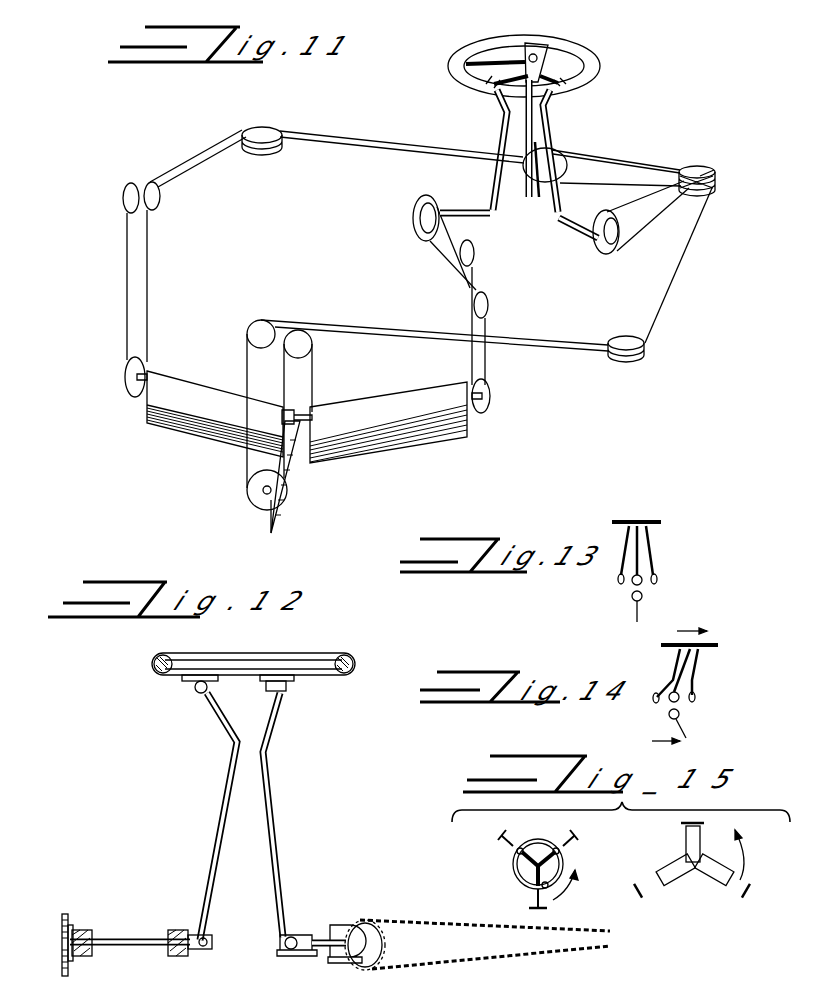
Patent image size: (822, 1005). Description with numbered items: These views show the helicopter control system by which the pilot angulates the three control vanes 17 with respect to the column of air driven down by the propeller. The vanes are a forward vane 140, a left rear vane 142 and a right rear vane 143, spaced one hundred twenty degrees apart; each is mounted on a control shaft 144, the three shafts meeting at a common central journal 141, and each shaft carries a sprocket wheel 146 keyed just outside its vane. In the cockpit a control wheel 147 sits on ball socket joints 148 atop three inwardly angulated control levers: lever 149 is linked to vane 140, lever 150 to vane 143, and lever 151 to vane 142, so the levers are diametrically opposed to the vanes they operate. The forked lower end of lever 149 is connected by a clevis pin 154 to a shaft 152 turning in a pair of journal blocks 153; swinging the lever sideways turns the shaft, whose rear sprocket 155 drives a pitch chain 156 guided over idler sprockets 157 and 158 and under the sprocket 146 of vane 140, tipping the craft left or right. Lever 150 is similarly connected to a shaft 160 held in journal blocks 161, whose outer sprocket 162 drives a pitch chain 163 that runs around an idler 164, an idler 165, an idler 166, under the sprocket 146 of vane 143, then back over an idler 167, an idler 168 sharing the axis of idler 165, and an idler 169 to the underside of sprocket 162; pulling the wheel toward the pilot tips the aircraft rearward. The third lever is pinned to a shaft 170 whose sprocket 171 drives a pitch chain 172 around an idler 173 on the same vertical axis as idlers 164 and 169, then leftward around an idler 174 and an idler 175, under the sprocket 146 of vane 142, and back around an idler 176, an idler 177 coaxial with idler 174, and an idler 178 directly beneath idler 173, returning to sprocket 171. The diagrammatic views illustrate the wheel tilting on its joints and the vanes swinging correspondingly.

In FIG. 11, the control vanes 17 is at (205, 433).
In FIG. 15, the control vanes 17 is at (707, 886).
In FIG. 11, the control vane 140 is at (388, 402).
In FIG. 11, the central journal 141 is at (297, 410).
In FIG. 11, the left control vane 142 is at (201, 392).
In FIG. 11, the right control vane 143 is at (296, 488).
In FIG. 11, the control shaft 144 is at (145, 371).
In FIG. 11, the sprocket wheel 146 is at (132, 396).
In FIG. 11, the control wheel 147 is at (602, 58).
In FIG. 12, the control wheel 147 is at (176, 654).
In FIG. 13, the control wheel 147 is at (663, 520).
In FIG. 14, the control wheel 147 is at (718, 644).
In FIG. 15, the control wheel 147 is at (537, 841).
In FIG. 11, the ball socket joints 148 is at (563, 85).
In FIG. 12, the ball socket joints 148 is at (199, 692).
In FIG. 11, the control lever 149 is at (504, 129).
In FIG. 12, the control lever 149 is at (224, 802).
In FIG. 11, the control lever 150 is at (540, 124).
In FIG. 12, the control lever 150 is at (272, 779).
In FIG. 11, the control lever 151 is at (546, 139).
In FIG. 11, the shaft 152 is at (460, 211).
In FIG. 12, the shaft 152 is at (126, 940).
In FIG. 12, the journal blocks 153 is at (90, 960).
In FIG. 12, the clevis pin 154 is at (212, 944).
In FIG. 11, the sprocket 155 is at (418, 210).
In FIG. 12, the sprocket 155 is at (62, 962).
In FIG. 11, the pitch chain 156 is at (487, 326).
In FIG. 11, the idler sprocket 157 is at (475, 250).
In FIG. 11, the idler sprocket 158 is at (489, 298).
In FIG. 11, the shaft 160 is at (538, 192).
In FIG. 12, the shaft 160 is at (322, 958).
In FIG. 12, the journal blocks 161 is at (290, 958).
In FIG. 11, the sprocket 162 is at (562, 166).
In FIG. 12, the sprocket 162 is at (386, 937).
In FIG. 11, the pitch chain 163 is at (352, 324).
In FIG. 12, the pitch chain 163 is at (506, 927).
In FIG. 11, the idler 164 is at (716, 184).
In FIG. 11, the idler 165 is at (626, 338).
In FIG. 11, the idler 166 is at (257, 322).
In FIG. 11, the idler 167 is at (307, 342).
In FIG. 11, the idler 168 is at (628, 358).
In FIG. 11, the idler 169 is at (708, 196).
In FIG. 11, the shaft 170 is at (575, 234).
In FIG. 11, the sprocket 171 is at (606, 248).
In FIG. 11, the pitch chain 172 is at (659, 167).
In FIG. 11, the idler 173 is at (698, 167).
In FIG. 11, the idler 174 is at (263, 132).
In FIG. 11, the idler 175 is at (125, 203).
In FIG. 11, the idler 176 is at (160, 196).
In FIG. 11, the idler 177 is at (262, 150).
In FIG. 11, the idler 178 is at (716, 172).